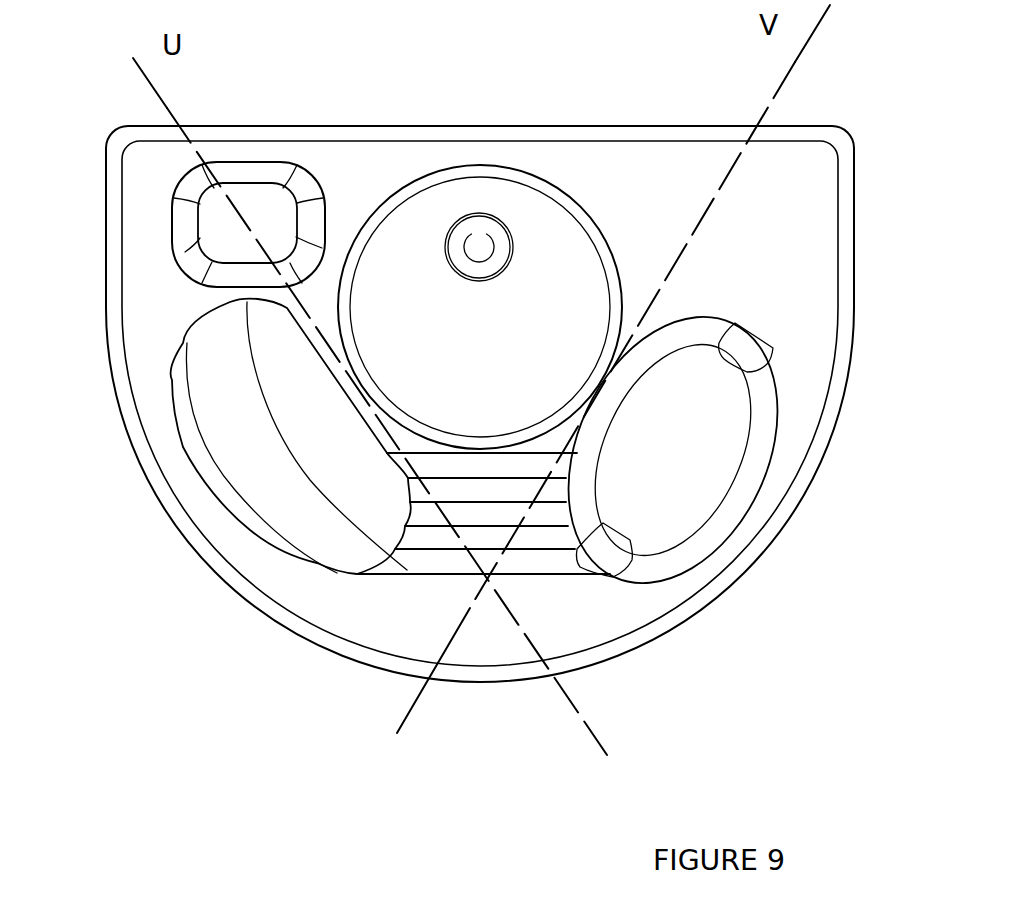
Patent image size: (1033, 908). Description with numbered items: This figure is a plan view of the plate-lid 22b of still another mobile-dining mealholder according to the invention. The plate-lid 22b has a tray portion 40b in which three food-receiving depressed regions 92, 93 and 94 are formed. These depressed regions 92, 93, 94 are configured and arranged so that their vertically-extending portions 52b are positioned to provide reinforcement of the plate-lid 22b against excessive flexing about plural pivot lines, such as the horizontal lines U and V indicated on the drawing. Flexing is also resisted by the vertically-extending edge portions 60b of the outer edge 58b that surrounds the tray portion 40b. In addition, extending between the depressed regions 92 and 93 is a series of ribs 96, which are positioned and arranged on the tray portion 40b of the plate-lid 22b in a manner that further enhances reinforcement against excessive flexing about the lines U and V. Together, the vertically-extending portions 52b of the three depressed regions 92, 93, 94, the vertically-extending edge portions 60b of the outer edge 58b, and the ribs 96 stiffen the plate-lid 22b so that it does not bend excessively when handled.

The plate-lid 22b is at (150, 646).
The tray portion 40b is at (620, 173).
The vertically-extending portions 52b is at (250, 170).
The outer edge 58b is at (762, 555).
The vertically-extending edge portions 60b is at (247, 593).
The food-receiving depressed region 92 is at (262, 430).
The food-receiving depressed region 93 is at (722, 417).
The food-receiving depressed region 94 is at (220, 225).
The ribs 96 is at (453, 467).